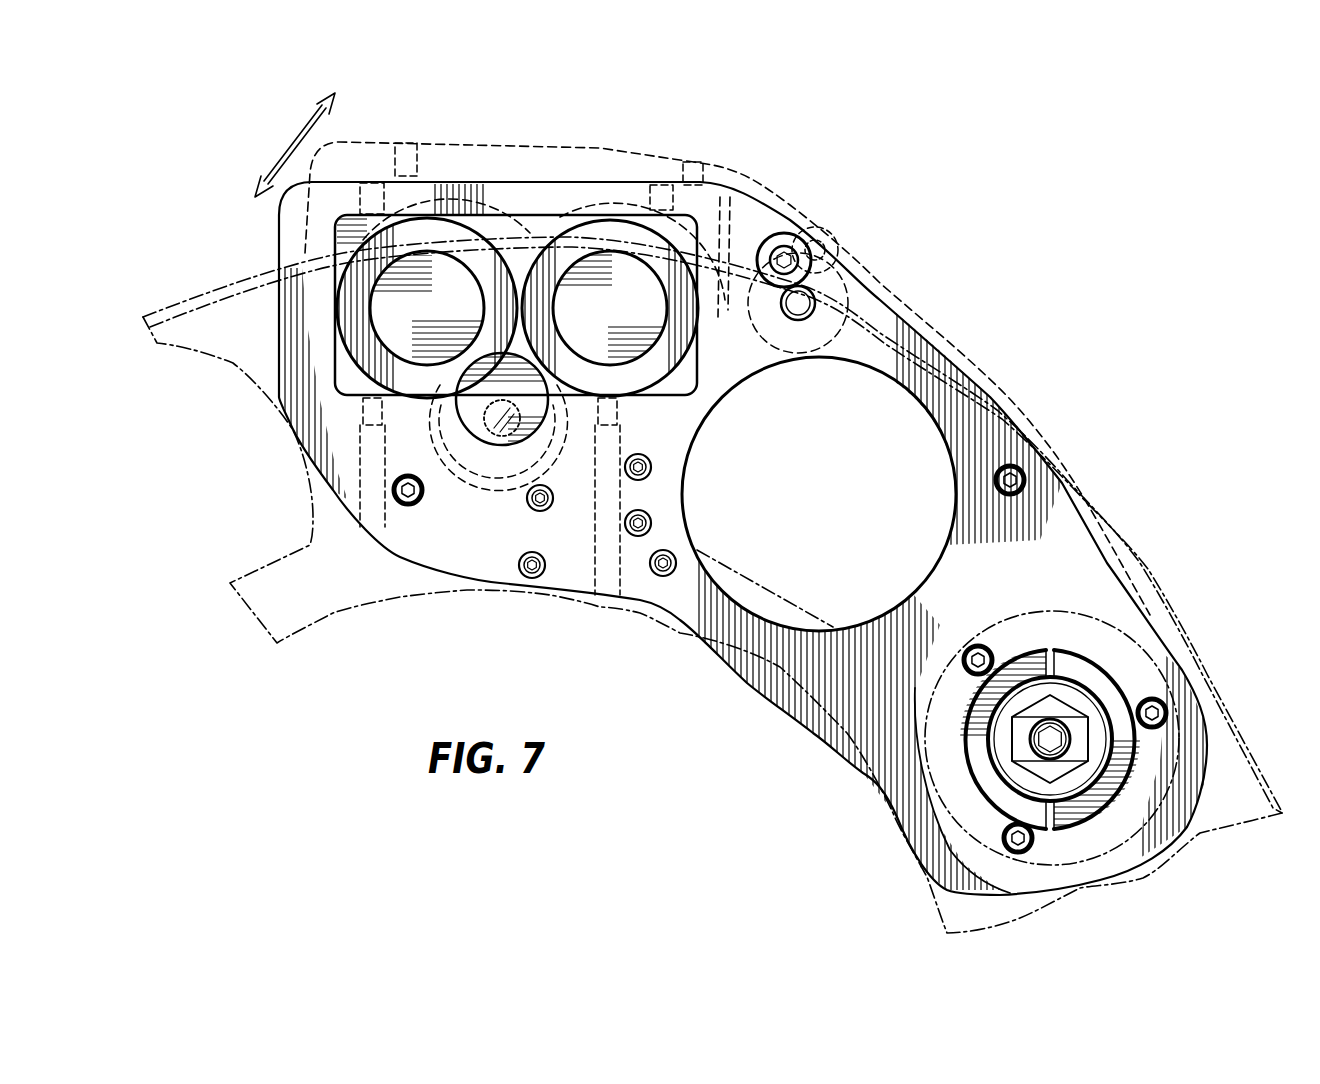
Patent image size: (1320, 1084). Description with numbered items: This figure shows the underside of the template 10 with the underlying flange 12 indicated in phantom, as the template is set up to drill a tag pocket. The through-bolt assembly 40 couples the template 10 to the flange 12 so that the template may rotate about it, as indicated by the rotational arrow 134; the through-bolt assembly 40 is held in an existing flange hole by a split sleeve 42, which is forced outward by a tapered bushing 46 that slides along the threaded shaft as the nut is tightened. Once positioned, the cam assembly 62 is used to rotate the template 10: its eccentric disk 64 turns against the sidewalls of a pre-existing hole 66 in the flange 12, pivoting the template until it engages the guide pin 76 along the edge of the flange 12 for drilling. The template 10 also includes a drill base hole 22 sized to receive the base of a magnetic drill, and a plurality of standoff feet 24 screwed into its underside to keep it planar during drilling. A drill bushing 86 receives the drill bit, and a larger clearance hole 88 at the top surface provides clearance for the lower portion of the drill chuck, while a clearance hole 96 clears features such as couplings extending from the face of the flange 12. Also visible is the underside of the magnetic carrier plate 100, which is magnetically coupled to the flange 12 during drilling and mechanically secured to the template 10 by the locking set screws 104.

The template 10 is at (788, 192).
The flange 12 is at (186, 306).
The drill base hole 22 is at (338, 352).
The feet 24 is at (407, 505).
The through-bolt assembly 40 is at (1073, 751).
The split sleeve 42 is at (1100, 652).
The tapered bushing 46 is at (1003, 748).
The cam assembly 62 is at (495, 446).
The eccentric disk 64 is at (533, 410).
The hole 66 is at (457, 478).
The guide pin 76 is at (775, 238).
The drill bushing 86 is at (824, 262).
The clearance hole 88 is at (850, 300).
The clearance hole 96 is at (920, 574).
The magnetic carrier plate 100 is at (542, 222).
The locking set screws 104 is at (372, 182).
The rotational arrow 134 is at (292, 147).